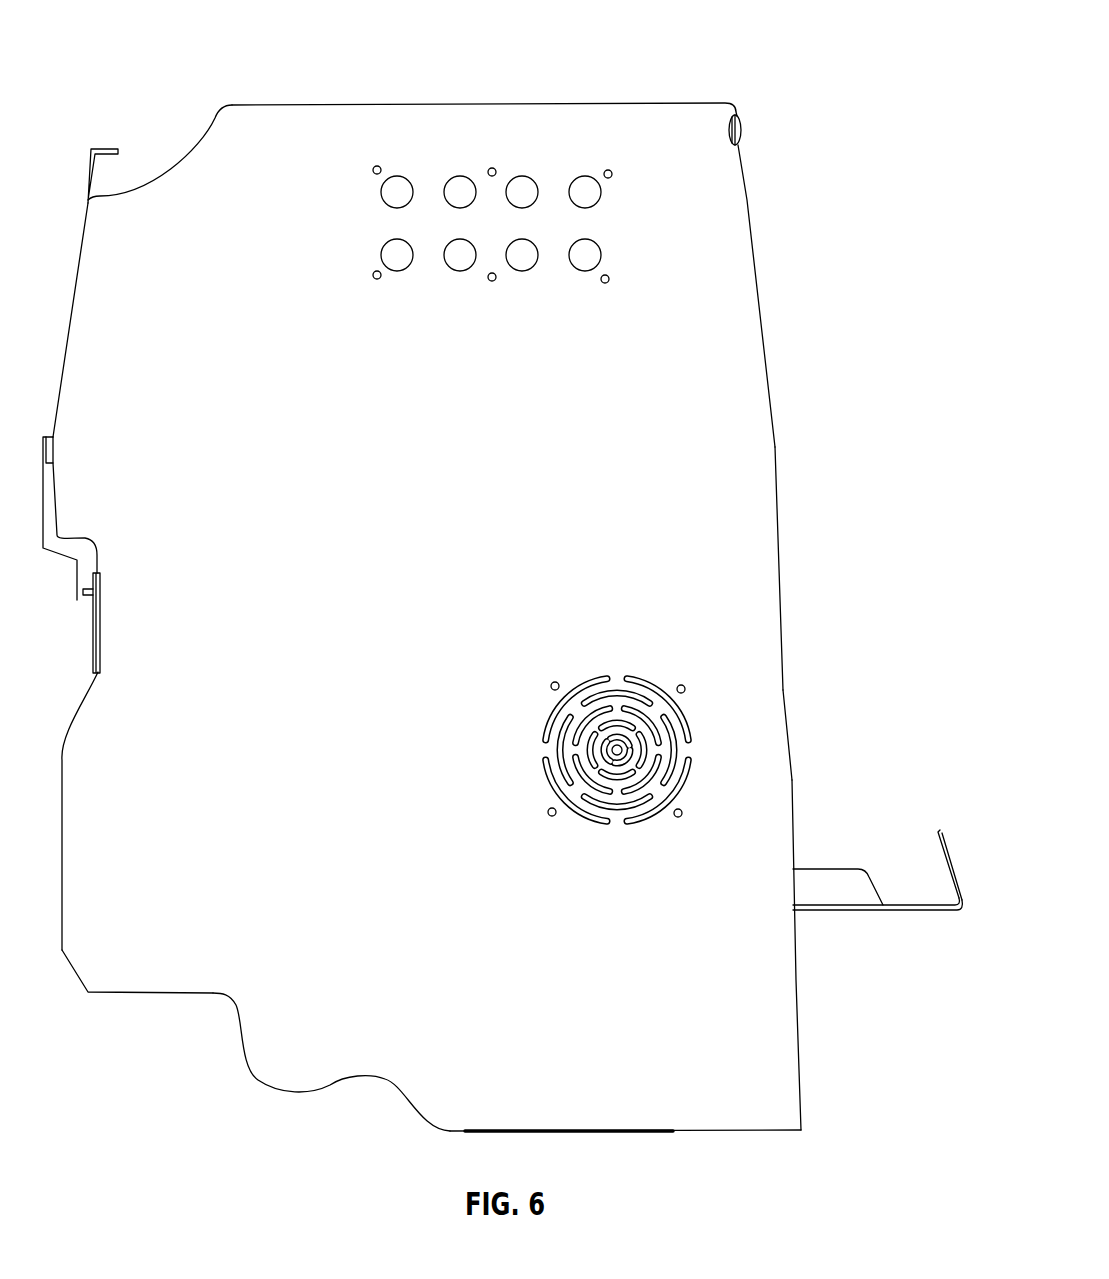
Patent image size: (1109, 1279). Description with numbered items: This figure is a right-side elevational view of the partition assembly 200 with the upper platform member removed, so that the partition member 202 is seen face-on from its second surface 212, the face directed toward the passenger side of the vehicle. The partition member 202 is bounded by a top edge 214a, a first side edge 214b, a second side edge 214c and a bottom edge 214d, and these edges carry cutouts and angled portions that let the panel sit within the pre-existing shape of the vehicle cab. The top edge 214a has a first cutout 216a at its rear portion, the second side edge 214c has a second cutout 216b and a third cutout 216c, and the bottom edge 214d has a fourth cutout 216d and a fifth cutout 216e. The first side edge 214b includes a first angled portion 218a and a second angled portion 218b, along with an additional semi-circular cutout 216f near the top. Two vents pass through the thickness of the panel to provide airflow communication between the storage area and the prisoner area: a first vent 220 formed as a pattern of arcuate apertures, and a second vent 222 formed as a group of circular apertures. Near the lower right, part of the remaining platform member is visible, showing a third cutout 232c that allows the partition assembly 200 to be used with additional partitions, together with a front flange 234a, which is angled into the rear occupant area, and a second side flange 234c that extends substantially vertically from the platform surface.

The partition assembly 200 is at (502, 603).
The partition member 202 is at (502, 620).
The second surface 212 is at (502, 620).
The top edge 214a is at (462, 103).
The first side edge 214b is at (810, 637).
The second side edge 214c is at (67, 322).
The bottom edge 214d is at (626, 1132).
The first cutout 216a is at (183, 162).
The second cutout 216b is at (60, 488).
The third cutout 216c is at (100, 565).
The fourth cutout 216d is at (172, 993).
The fifth cutout 216e is at (357, 1077).
The semi-circular cutout 216f is at (742, 128).
The first angled portion 218a is at (783, 686).
The second angled portion 218b is at (775, 447).
The first vent 220 is at (597, 681).
The second vent 222 is at (460, 270).
The third cutout 232c is at (877, 880).
The front flange 234a is at (938, 835).
The second side flange 234c is at (815, 880).